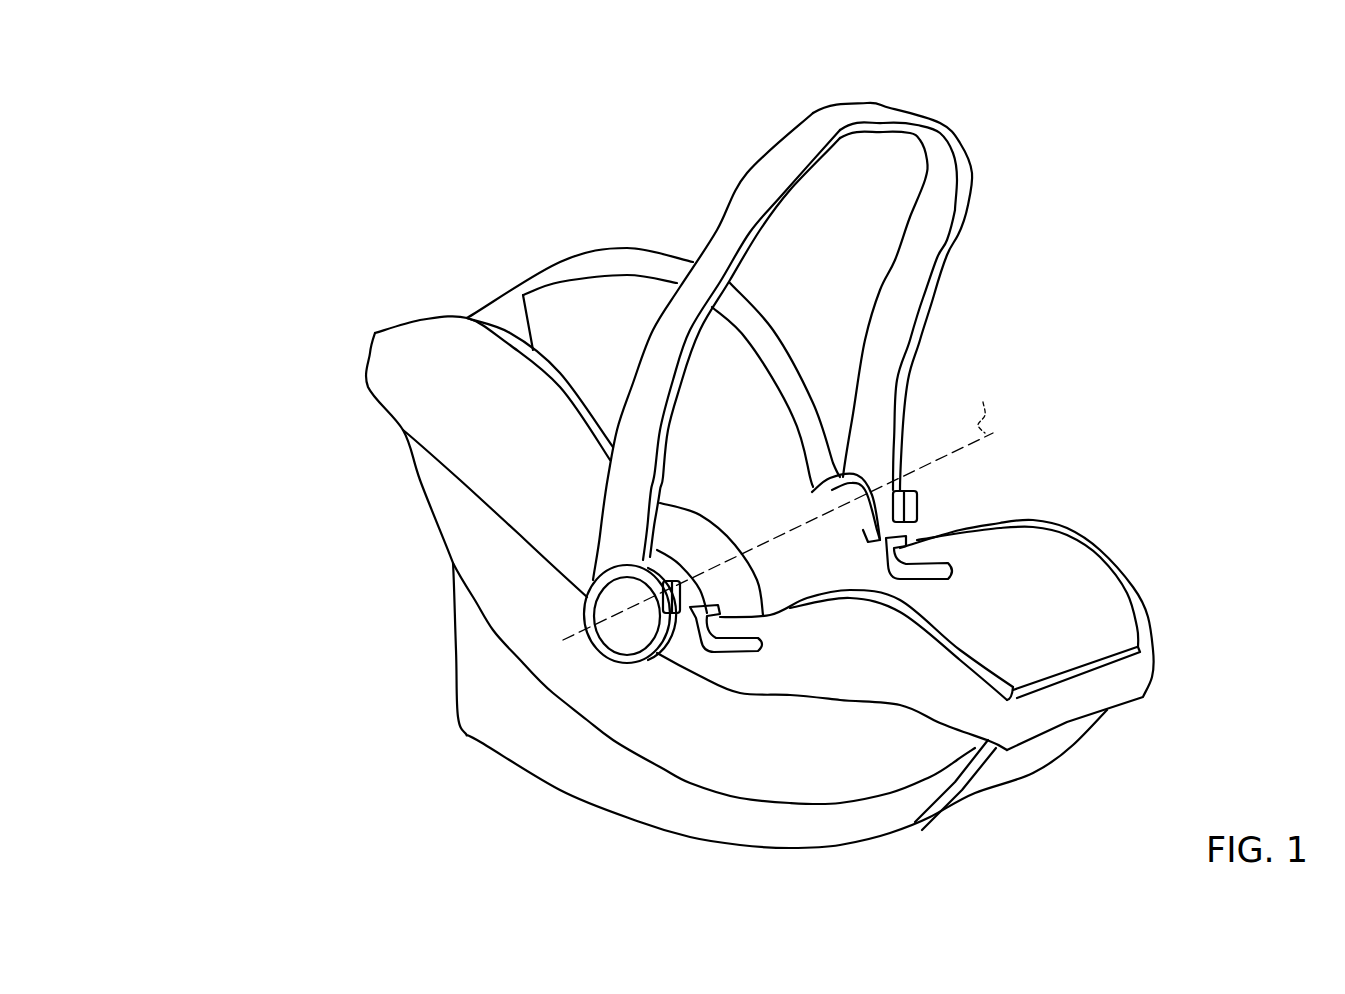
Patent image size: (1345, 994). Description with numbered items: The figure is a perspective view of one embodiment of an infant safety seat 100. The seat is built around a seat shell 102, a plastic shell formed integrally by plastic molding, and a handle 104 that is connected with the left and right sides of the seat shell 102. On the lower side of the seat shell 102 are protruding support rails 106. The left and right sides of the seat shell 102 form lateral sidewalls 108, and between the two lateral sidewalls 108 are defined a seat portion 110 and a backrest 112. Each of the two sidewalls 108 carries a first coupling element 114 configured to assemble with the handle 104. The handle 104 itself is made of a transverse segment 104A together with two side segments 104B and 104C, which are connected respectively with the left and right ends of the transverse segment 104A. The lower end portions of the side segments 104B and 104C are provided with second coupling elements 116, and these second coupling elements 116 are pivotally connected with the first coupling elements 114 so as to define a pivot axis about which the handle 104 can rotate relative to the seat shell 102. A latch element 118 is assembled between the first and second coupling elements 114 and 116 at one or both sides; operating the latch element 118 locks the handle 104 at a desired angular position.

The infant safety seat 100 is at (290, 73).
The seat shell 102 is at (430, 522).
The handle 104 is at (941, 294).
The transverse segment 104A is at (883, 115).
The side segment 104B is at (748, 205).
The side segment 104C is at (935, 240).
The support rails 106 is at (483, 738).
The lateral sidewalls 108 is at (773, 345).
The seat portion 110 is at (1082, 663).
The backrest 112 is at (500, 312).
The first coupling elements 114 is at (675, 565).
The second coupling elements 116 is at (603, 607).
The latch element 118 is at (710, 580).